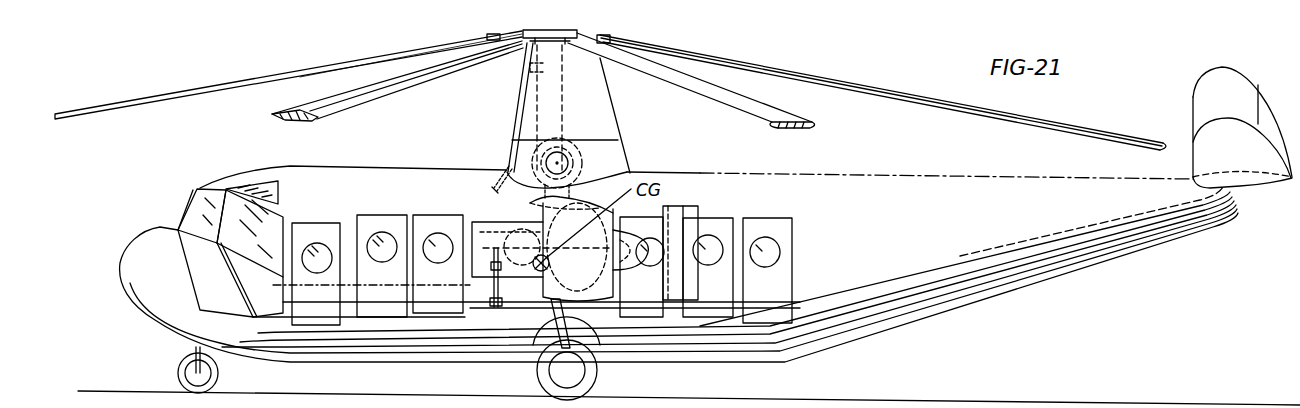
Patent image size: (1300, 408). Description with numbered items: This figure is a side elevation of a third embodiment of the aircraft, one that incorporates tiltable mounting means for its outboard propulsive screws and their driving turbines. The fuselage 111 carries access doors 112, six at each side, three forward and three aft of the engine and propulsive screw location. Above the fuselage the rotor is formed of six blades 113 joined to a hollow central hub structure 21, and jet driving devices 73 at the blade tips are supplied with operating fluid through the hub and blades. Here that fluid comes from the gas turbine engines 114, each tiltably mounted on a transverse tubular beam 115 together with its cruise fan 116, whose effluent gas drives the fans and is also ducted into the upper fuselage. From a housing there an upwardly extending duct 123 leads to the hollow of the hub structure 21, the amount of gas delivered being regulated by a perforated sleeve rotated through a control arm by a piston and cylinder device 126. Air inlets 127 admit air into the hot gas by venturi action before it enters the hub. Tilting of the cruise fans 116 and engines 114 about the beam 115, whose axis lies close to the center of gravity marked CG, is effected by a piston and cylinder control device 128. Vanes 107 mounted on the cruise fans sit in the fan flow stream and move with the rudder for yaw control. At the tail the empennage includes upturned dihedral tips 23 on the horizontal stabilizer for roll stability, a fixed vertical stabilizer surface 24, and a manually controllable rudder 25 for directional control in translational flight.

The hollow central hub structure 21 is at (566, 21).
The upturned dihedral tips 23 is at (1252, 168).
The fixed vertical stabilizer surface 24 is at (1210, 85).
The rudder 25 is at (1265, 100).
The jet driving devices 73 is at (1160, 146).
The vanes 107 is at (684, 208).
The fuselage 111 is at (937, 198).
The access doors 112 is at (428, 222).
The blades 113 is at (253, 77).
The gas turbine engine 114 is at (508, 223).
The transverse tubular beam 115 is at (474, 221).
The cruise fan 116 is at (551, 310).
The upwardly extending duct 123 is at (552, 112).
The fluid pressure piston and cylinder device 126 is at (505, 164).
The air inlets 127 is at (528, 68).
The piston and cylinder control device 128 is at (487, 285).